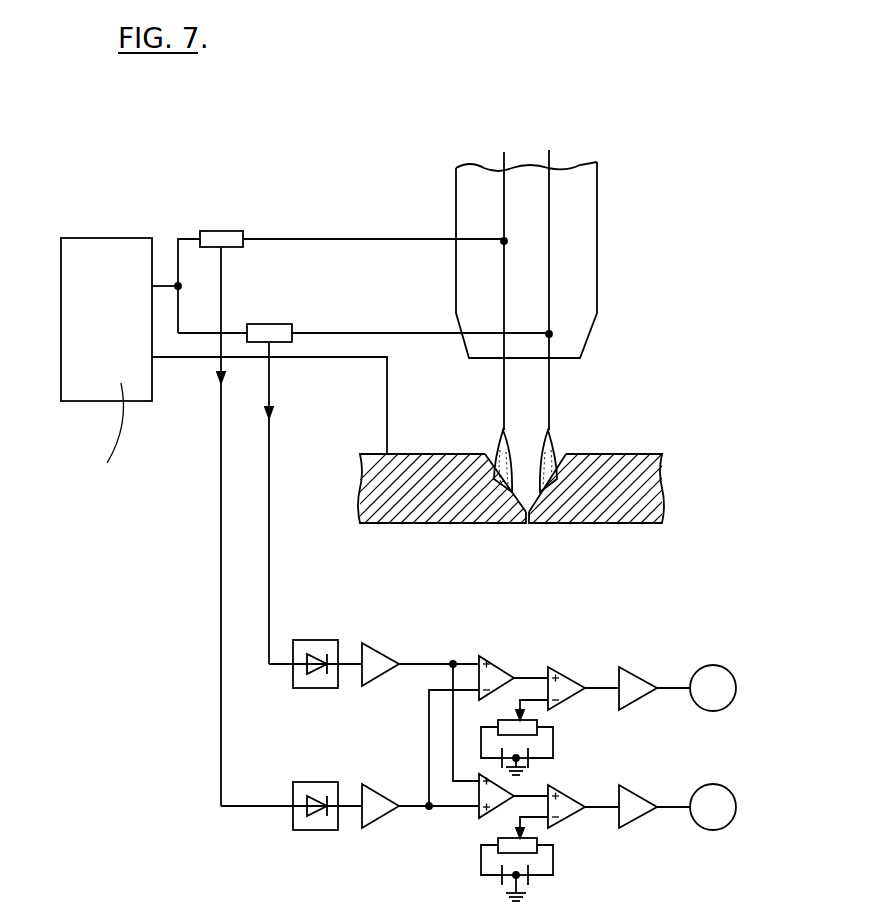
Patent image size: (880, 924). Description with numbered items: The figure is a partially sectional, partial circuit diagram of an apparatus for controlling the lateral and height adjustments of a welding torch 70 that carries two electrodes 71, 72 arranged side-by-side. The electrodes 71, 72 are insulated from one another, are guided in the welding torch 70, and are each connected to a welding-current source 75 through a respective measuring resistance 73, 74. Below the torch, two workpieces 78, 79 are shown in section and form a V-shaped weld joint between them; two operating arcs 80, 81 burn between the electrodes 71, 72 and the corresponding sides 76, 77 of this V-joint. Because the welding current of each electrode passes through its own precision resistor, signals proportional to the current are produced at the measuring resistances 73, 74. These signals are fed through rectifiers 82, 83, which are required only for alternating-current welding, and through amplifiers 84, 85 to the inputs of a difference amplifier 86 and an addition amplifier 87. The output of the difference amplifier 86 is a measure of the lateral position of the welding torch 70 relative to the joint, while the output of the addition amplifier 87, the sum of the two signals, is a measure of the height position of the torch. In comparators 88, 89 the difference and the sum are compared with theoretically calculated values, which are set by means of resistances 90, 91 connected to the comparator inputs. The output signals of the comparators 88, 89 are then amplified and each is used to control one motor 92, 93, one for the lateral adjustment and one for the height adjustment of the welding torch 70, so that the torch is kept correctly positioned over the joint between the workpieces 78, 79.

The welding torch 70 is at (598, 245).
The electrode 71 is at (551, 158).
The electrode 72 is at (508, 158).
The measuring resistance 73 is at (268, 323).
The measuring resistance 74 is at (223, 230).
The welding-current source 75 is at (108, 237).
The side of the weld joint 76 is at (565, 454).
The side of the weld joint 77 is at (486, 453).
The workpiece 78 is at (600, 523).
The workpiece 79 is at (442, 523).
The operating arc 80 is at (555, 430).
The operating arc 81 is at (498, 430).
The rectifier 82 is at (315, 640).
The rectifier 83 is at (310, 783).
The amplifier 84 is at (378, 643).
The amplifier 85 is at (378, 784).
The difference amplifier 86 is at (495, 662).
The addition amplifier 87 is at (478, 808).
The comparator 88 is at (568, 672).
The comparator 89 is at (562, 792).
The resistance 90 is at (497, 721).
The resistance 91 is at (540, 850).
The motor 92 is at (721, 668).
The motor 93 is at (717, 785).